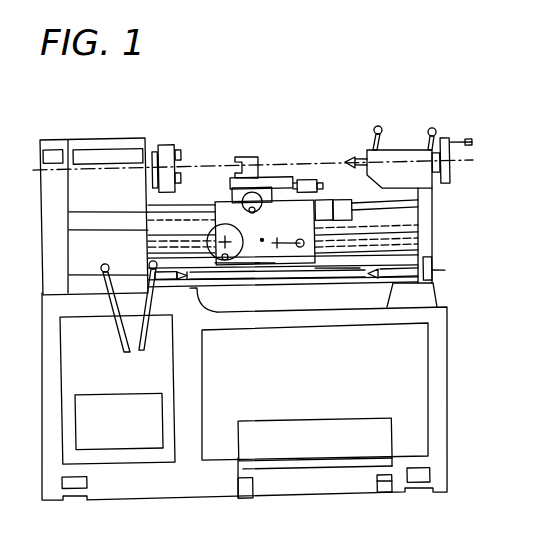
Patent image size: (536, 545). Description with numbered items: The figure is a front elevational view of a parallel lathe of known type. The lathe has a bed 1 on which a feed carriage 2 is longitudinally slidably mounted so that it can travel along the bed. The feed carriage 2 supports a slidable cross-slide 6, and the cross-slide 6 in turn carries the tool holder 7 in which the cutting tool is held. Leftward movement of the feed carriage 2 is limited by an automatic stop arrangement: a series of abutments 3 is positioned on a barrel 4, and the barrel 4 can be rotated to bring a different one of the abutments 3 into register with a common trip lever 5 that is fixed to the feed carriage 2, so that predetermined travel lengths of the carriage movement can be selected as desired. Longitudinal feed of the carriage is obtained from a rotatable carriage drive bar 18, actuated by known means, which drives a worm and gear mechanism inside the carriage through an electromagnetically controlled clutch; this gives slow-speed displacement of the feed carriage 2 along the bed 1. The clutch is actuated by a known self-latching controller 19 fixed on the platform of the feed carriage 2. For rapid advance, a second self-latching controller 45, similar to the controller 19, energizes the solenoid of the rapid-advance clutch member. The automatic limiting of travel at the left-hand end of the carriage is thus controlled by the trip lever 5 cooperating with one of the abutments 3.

The bed 1 is at (440, 328).
The feed carriage 2 is at (260, 228).
The abutments 3 is at (249, 265).
The barrel 4 is at (338, 272).
The trip lever 5 is at (262, 265).
The cross-slide 6 is at (241, 187).
The tool holder 7 is at (253, 162).
The carriage drive bar 18 is at (406, 253).
The controller 19 is at (325, 211).
The self-latching controller 45 is at (345, 209).